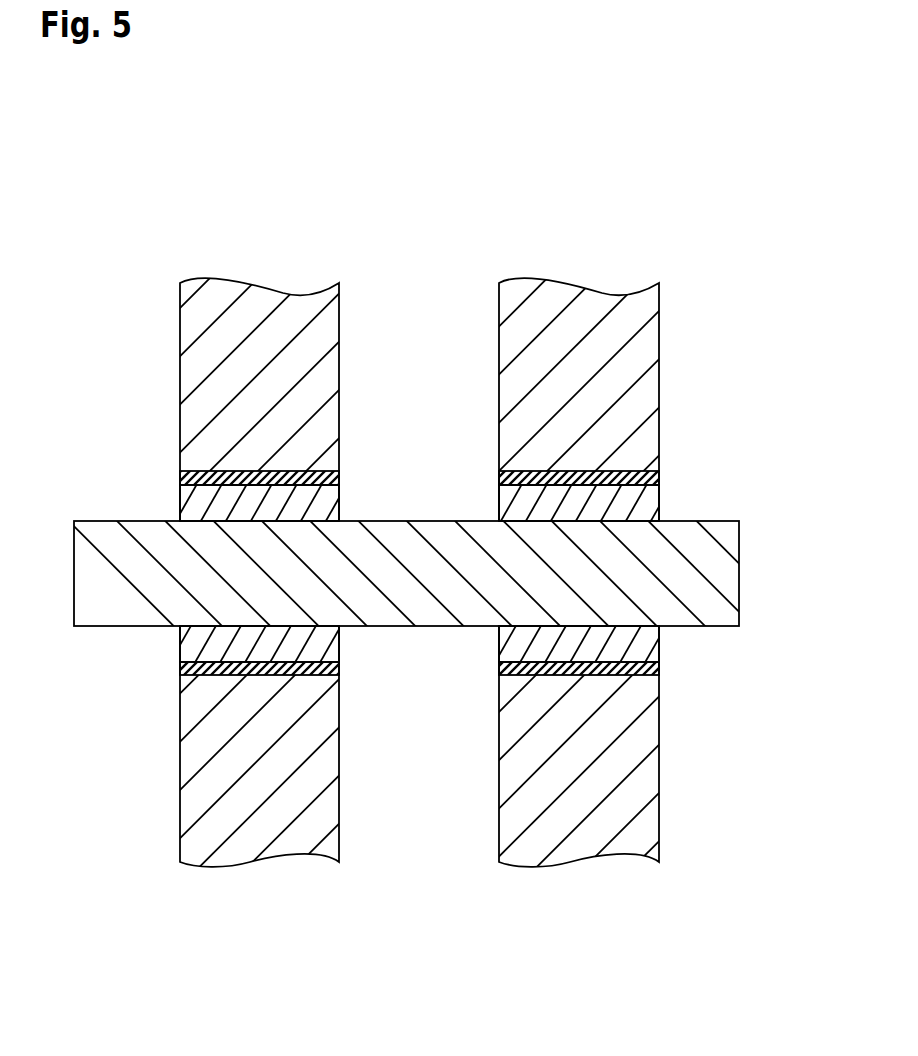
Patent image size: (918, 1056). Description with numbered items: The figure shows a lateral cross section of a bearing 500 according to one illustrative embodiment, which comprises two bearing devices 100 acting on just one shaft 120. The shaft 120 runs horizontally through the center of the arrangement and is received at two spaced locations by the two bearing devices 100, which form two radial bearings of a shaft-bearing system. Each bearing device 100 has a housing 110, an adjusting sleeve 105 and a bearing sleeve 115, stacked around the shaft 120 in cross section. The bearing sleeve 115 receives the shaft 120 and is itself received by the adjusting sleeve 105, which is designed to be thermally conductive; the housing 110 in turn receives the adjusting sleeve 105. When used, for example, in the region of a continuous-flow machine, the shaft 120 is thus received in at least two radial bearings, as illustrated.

The bearing 500 is at (324, 163).
The bearing device 100 is at (181, 249).
The housing 110 is at (195, 439).
The adjusting sleeve 105 is at (192, 480).
The bearing sleeve 115 is at (192, 505).
The shaft 120 is at (437, 537).